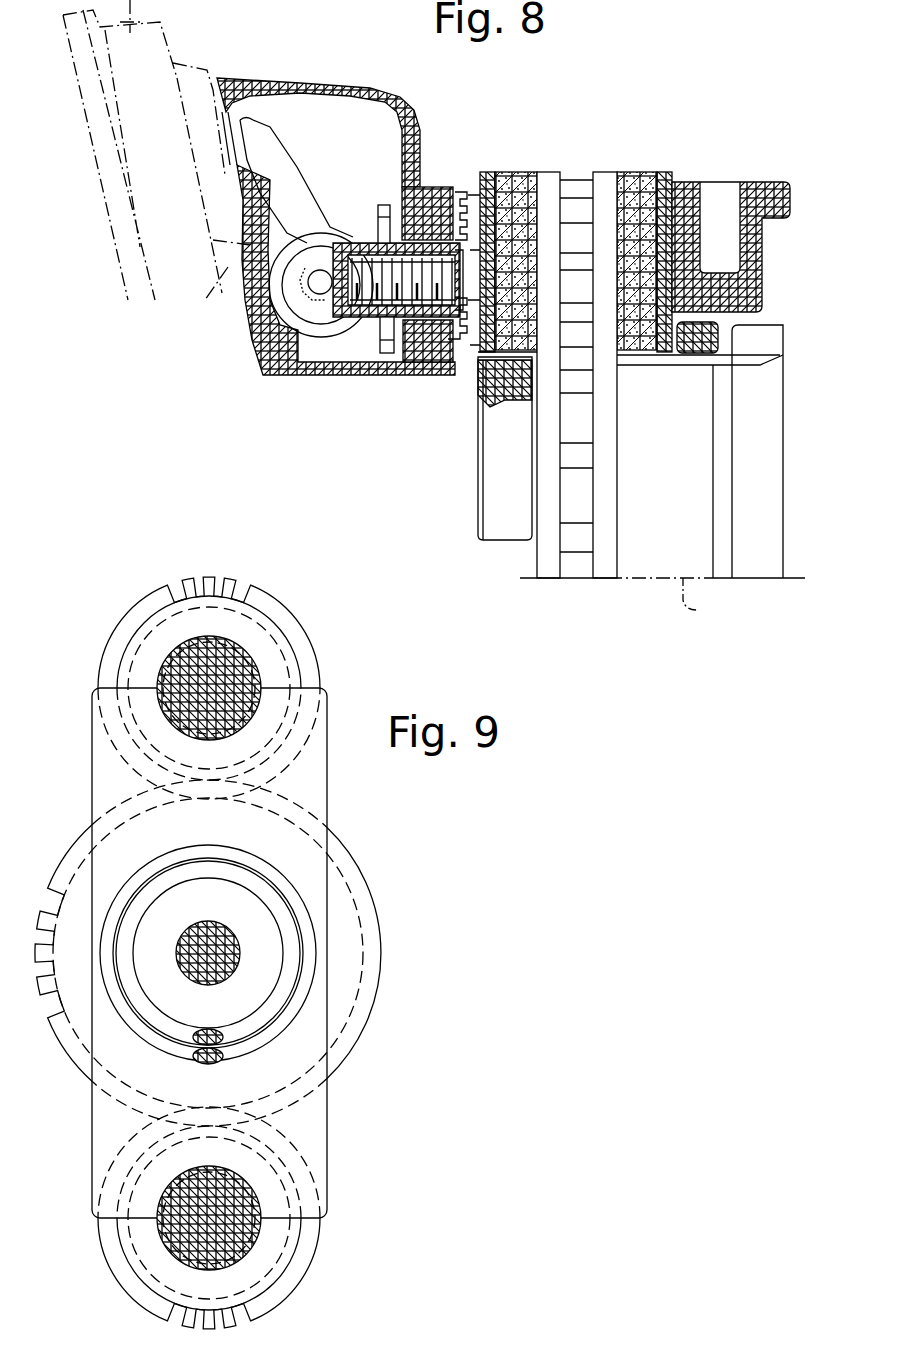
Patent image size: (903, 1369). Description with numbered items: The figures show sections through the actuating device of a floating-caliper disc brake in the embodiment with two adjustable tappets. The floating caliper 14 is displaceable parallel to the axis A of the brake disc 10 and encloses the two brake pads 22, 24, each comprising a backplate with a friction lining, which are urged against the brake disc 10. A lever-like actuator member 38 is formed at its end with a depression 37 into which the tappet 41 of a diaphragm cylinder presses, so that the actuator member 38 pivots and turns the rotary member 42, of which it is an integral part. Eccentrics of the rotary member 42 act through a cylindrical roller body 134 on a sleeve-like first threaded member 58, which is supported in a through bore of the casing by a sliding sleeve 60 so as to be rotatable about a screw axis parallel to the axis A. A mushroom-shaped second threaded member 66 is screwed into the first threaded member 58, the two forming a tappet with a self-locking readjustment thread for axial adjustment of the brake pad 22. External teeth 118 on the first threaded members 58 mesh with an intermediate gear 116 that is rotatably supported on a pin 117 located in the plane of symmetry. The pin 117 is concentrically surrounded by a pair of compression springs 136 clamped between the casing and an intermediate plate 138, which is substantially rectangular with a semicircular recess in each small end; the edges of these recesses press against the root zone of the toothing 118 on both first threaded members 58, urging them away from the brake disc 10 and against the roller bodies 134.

In FIG. 8, the brake disc 10 is at (605, 563).
In FIG. 8, the floating caliper 14 is at (698, 183).
In FIG. 8, the brake pad 22 is at (519, 156).
In FIG. 8, the brake pad 24 is at (641, 156).
In FIG. 8, the depression 37 is at (259, 94).
In FIG. 8, the actuator member 38 is at (301, 170).
In FIG. 8, the tappet 41 is at (248, 146).
In FIG. 8, the rotary member 42 is at (351, 206).
In FIG. 8, the first threaded member 58 is at (353, 312).
In FIG. 9, the first threaded member 58 is at (273, 668).
In FIG. 8, the sliding sleeve 60 is at (433, 190).
In FIG. 8, the second threaded member 66 is at (433, 295).
In FIG. 9, the second threaded member 66 is at (172, 660).
In FIG. 8, the intermediate gear 116 is at (383, 353).
In FIG. 9, the intermediate gear 116 is at (340, 893).
In FIG. 9, the pin 117 is at (232, 953).
In FIG. 9, the external teeth 118 is at (242, 583).
In FIG. 8, the roller body 134 is at (322, 280).
In FIG. 9, the compression springs 136 is at (196, 1058).
In FIG. 9, the intermediate plate 138 is at (328, 1108).
In FIG. 8, the axis of the brake disc A is at (700, 607).